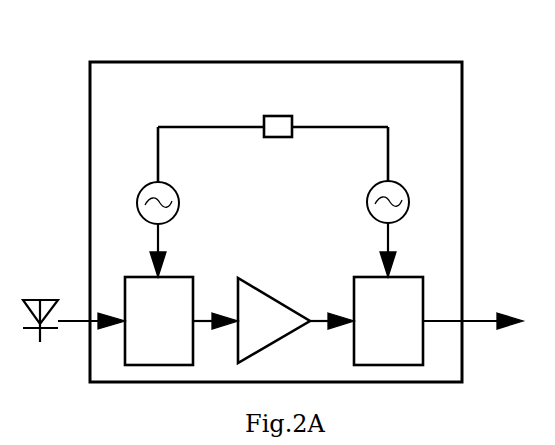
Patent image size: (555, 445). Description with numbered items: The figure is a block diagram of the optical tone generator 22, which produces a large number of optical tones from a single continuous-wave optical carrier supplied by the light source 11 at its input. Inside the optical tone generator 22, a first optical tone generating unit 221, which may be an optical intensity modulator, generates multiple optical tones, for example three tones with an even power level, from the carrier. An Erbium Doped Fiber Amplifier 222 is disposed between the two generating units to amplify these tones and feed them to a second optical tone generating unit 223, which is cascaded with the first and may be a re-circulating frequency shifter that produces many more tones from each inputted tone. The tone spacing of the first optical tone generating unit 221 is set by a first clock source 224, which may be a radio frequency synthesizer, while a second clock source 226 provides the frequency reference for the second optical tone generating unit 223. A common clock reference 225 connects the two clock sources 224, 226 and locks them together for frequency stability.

The antenna 11 is at (40, 300).
The optical tone generator 22 is at (440, 62).
The first optical tone generating unit 221 is at (159, 321).
The Erbium Doped Fiber Amplifier 222 is at (274, 320).
The second optical tone generating unit 223 is at (388, 321).
The first clock source 224 is at (174, 186).
The common clock reference 225 is at (279, 116).
The second clock source 226 is at (398, 184).